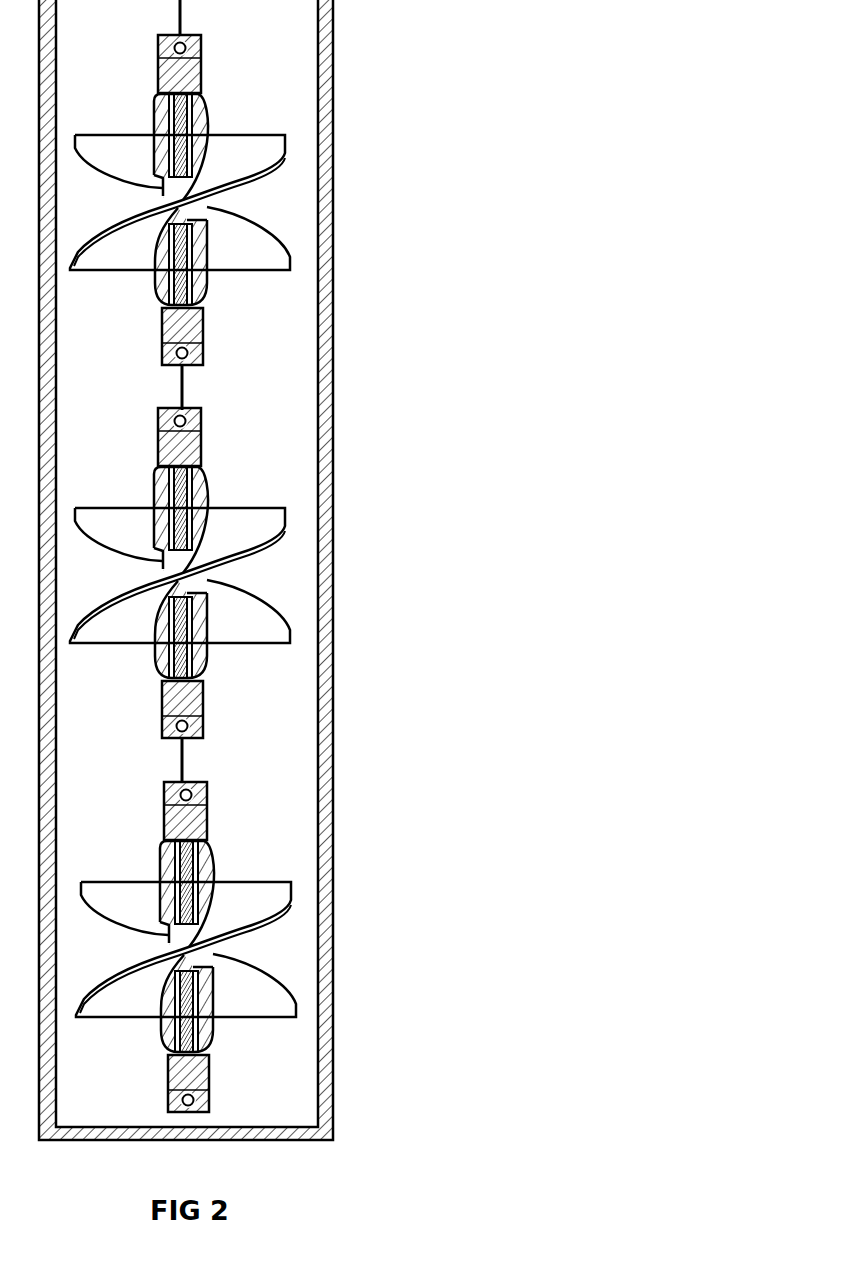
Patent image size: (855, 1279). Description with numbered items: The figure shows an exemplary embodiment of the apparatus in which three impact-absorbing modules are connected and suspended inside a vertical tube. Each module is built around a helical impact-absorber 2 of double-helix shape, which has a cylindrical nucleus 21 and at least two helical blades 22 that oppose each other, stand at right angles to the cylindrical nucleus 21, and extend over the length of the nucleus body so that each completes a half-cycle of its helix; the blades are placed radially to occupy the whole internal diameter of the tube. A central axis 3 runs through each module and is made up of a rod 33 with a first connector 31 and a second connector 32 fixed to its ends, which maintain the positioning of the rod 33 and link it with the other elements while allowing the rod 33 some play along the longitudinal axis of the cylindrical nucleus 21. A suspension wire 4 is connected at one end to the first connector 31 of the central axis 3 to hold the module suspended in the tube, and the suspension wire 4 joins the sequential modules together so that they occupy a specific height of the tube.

The helical impact-absorber 2 is at (193, 582).
The cylindrical nucleus 21 is at (203, 127).
The helical blades 22 is at (253, 887).
The central axis 3 is at (190, 247).
The first connector 31 is at (202, 63).
The second connector 32 is at (193, 703).
The rod 33 is at (183, 492).
The suspension wire 4 is at (183, 398).